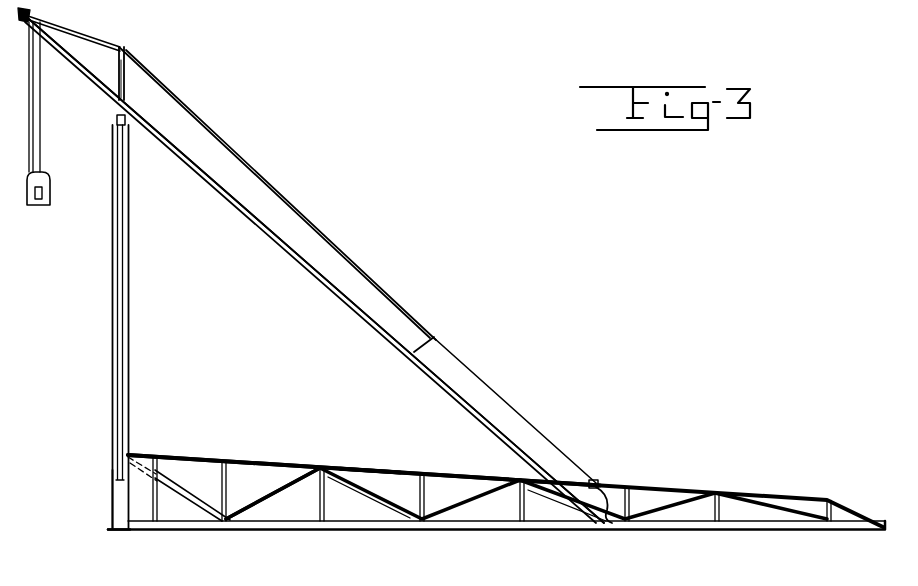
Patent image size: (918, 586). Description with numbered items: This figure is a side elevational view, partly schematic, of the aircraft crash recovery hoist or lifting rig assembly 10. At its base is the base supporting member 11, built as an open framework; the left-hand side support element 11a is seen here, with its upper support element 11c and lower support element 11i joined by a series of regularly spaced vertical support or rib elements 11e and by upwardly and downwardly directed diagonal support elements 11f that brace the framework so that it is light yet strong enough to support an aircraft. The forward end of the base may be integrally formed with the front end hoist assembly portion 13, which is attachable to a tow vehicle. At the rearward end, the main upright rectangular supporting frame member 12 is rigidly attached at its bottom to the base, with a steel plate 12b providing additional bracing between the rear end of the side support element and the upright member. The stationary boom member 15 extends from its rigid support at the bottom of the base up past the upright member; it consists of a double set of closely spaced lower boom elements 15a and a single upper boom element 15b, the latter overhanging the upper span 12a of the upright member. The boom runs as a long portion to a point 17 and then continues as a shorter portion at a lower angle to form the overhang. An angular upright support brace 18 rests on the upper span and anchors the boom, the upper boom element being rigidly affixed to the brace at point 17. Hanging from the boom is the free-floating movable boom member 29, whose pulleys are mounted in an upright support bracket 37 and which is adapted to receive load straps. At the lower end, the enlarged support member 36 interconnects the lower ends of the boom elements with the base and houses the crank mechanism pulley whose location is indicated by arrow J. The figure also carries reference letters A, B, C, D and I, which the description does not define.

The aircraft crash recovery hoist or lifting rig assembly 10 is at (390, 238).
The base supporting member 11 is at (352, 536).
The left-hand side support element 11a is at (268, 460).
The upper support element 11c is at (366, 471).
The vertical support or rib elements 11e is at (226, 487).
The diagonal support elements 11f is at (398, 512).
The lower support element 11i is at (268, 518).
The main upright supporting frame member 12 is at (129, 333).
The upper span 12a is at (117, 121).
The steel plate 12b is at (133, 493).
The front end hoist assembly portion 13 is at (770, 497).
The boom member 15 is at (262, 220).
The lower boom elements 15a is at (308, 274).
The upper boom element 15b is at (236, 153).
The boom affixing point 17 is at (122, 47).
The upright support brace 18 is at (124, 72).
The movable boom member 29 is at (43, 193).
The enlarged support member 36 is at (467, 371).
The upright support bracket 37 is at (46, 174).
The point A is at (30, 12).
The point B is at (43, 215).
The point C is at (128, 98).
The point D is at (436, 336).
The point I is at (104, 529).
The crank pulley location arrow J is at (516, 431).